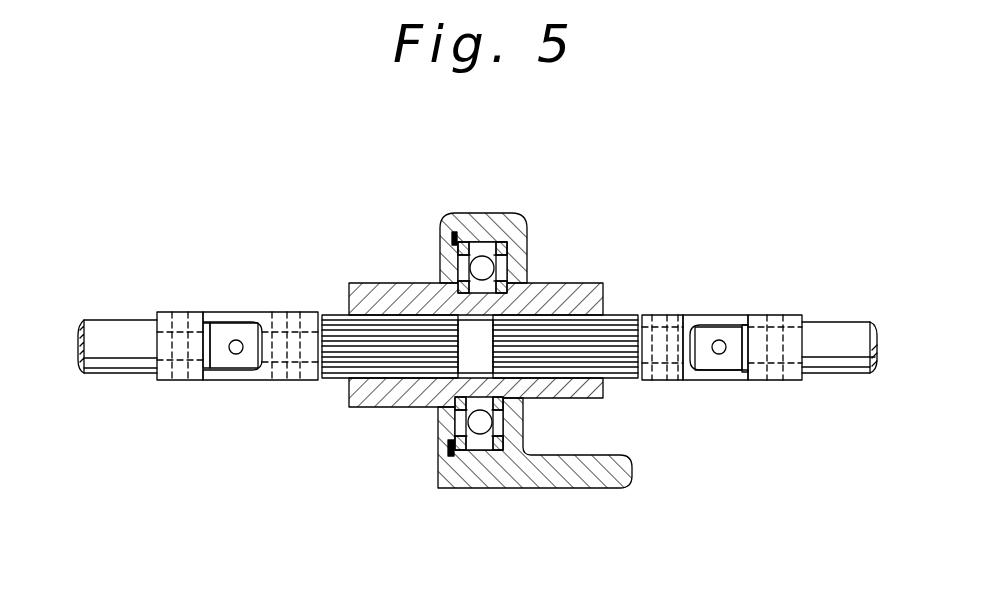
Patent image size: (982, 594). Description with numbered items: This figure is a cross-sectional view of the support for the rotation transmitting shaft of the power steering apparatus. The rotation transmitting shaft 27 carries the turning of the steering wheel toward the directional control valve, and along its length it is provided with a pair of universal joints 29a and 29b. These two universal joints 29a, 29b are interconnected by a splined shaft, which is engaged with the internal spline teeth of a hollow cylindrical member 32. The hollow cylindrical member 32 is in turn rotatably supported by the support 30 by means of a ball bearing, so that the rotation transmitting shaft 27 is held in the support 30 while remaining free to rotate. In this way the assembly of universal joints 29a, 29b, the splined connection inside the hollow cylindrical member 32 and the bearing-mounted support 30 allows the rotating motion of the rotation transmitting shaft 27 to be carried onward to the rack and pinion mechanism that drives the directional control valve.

The rotation transmitting shaft 27 is at (832, 322).
The universal joint 29a is at (713, 315).
The universal joint 29b is at (223, 312).
The support 30 is at (530, 232).
The hollow cylindrical member 32 is at (574, 298).